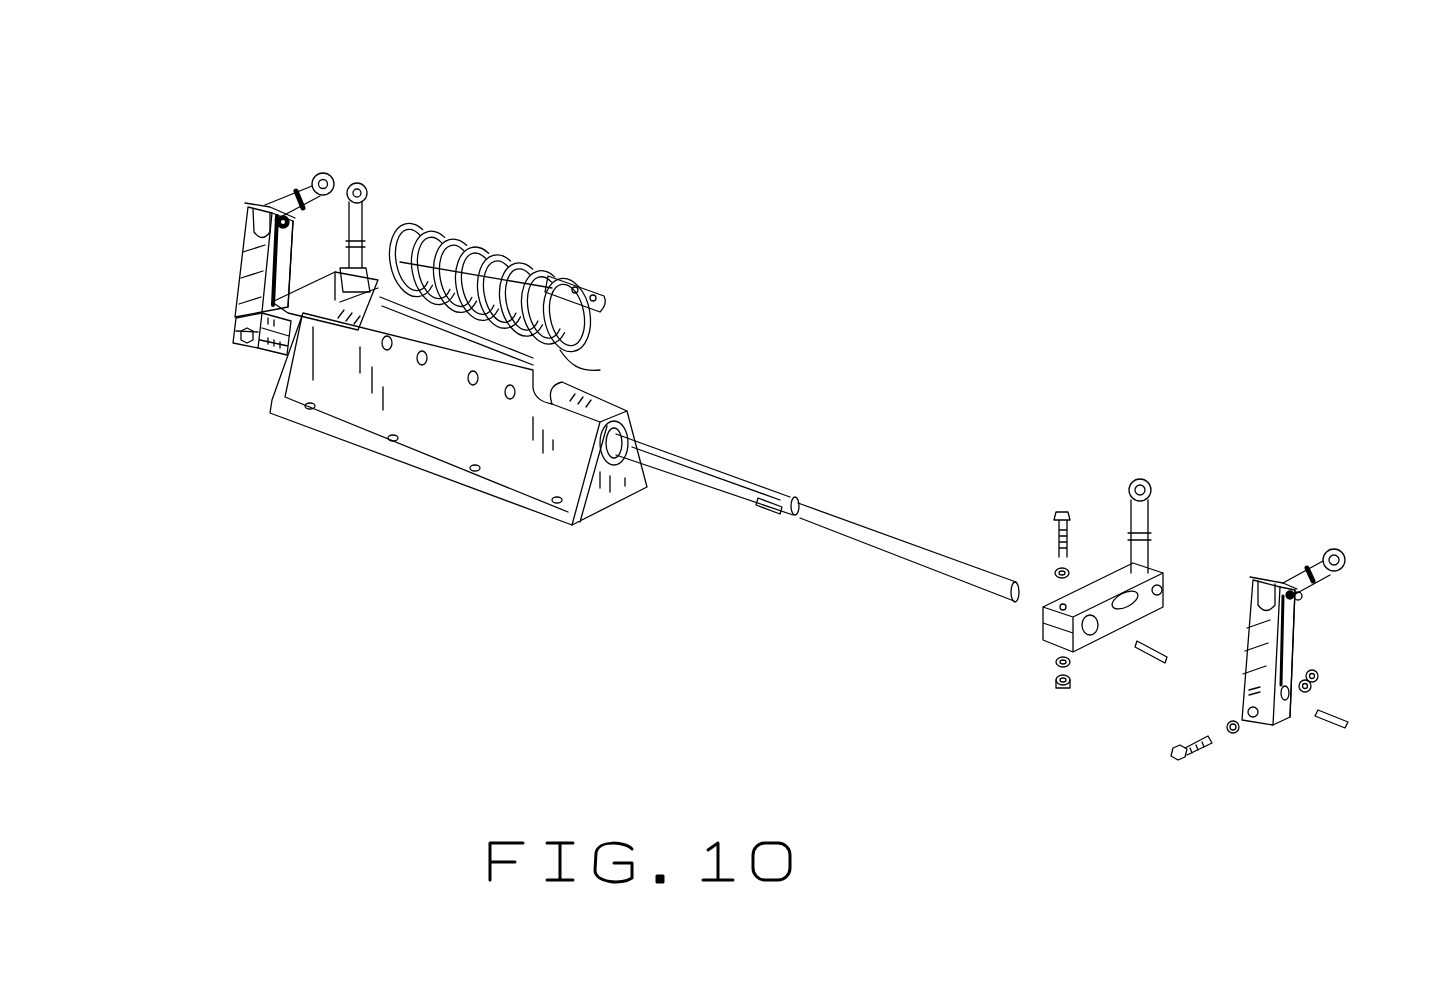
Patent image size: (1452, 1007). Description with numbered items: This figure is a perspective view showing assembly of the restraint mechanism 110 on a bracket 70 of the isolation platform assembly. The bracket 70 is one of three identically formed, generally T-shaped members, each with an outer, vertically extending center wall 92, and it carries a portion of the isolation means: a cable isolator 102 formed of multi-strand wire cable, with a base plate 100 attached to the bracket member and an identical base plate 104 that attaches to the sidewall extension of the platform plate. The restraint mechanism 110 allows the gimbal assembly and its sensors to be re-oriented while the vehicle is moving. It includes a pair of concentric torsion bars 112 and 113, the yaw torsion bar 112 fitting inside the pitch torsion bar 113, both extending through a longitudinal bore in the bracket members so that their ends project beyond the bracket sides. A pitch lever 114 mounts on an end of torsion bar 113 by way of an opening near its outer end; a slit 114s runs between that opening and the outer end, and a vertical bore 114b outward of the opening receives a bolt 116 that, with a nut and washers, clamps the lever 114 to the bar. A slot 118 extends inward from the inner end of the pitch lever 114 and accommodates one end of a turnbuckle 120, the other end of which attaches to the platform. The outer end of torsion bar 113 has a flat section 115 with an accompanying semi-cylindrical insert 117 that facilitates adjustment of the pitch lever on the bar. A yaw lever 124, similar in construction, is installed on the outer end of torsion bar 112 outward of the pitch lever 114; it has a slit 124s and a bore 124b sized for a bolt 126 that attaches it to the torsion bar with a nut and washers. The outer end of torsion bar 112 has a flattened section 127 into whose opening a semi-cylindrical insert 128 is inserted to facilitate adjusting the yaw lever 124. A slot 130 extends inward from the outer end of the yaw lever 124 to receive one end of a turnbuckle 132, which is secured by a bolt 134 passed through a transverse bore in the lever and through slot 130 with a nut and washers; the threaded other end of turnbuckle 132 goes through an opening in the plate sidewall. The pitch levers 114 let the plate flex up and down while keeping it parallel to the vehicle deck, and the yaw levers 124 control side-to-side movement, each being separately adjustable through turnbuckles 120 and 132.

The bracket 70 is at (492, 502).
The center wall 92 is at (466, 427).
The base plate 100 is at (560, 352).
The cable isolator 102 is at (505, 240).
The base plate 104 is at (606, 299).
The restraint mechanism 110 is at (920, 440).
The torsion bar 112 is at (940, 556).
The torsion bar 113 is at (720, 501).
The pitch lever 114 is at (268, 360).
The vertical bore 114b is at (1067, 603).
The slit 114s is at (1052, 632).
The flat section 115 is at (778, 520).
The bolt 116 is at (302, 213).
The semi-cylindrical insert 117 is at (1153, 637).
The slot 118 is at (376, 292).
The turnbuckle 120 is at (357, 233).
The yaw lever 124 is at (248, 262).
The bore 124b is at (1243, 701).
The slit 124s is at (1290, 708).
The bolt 126 is at (243, 338).
The flattened section 127 is at (957, 583).
The semi-cylindrical insert 128 is at (1338, 736).
The slot 130 is at (252, 232).
The turnbuckle 132 is at (300, 205).
The bolt 134 is at (1303, 598).